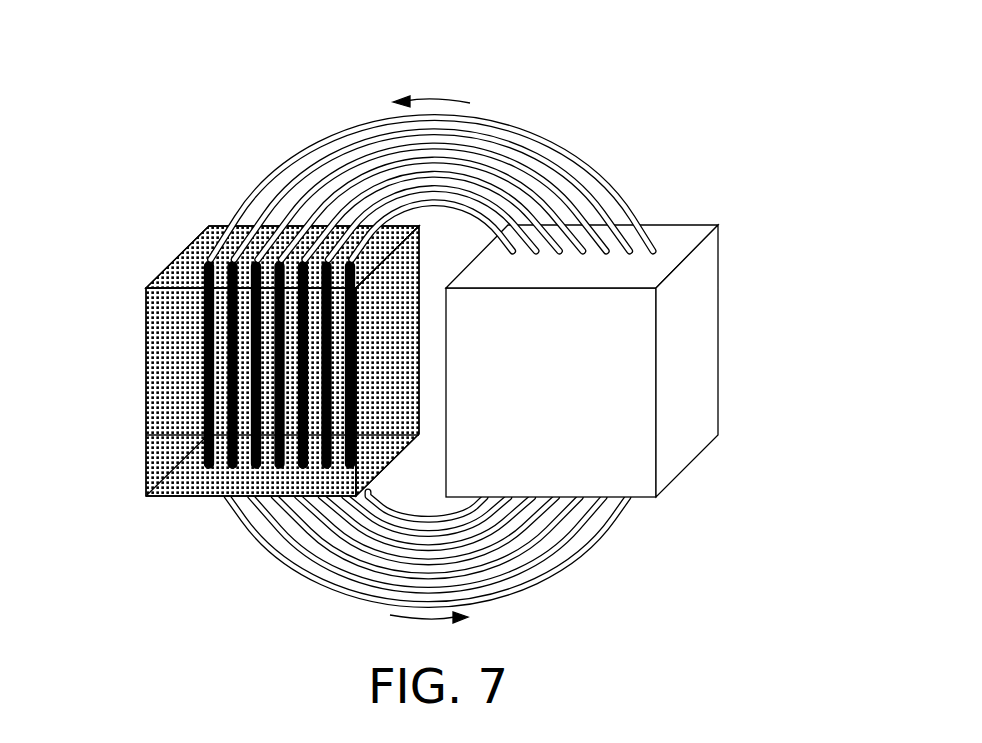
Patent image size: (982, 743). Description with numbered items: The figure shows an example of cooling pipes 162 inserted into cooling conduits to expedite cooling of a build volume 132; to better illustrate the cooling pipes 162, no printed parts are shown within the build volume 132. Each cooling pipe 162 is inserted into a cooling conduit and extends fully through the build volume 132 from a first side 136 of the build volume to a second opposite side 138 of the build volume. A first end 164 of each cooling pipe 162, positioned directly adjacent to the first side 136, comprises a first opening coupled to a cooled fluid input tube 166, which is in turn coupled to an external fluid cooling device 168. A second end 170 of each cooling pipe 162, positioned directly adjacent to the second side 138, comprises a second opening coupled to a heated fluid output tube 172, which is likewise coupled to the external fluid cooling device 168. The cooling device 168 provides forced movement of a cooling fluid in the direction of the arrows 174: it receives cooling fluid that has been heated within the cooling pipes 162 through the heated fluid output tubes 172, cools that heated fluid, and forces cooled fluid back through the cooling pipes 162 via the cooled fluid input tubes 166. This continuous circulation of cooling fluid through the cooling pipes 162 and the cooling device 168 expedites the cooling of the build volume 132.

The build volume 132 is at (254, 390).
The first side of the build volume 136 is at (167, 279).
The second opposite side of the build volume 138 is at (165, 497).
The cooling pipe 162 is at (205, 405).
The first end of the cooling pipe 164 is at (207, 260).
The cooled fluid input tube 166 is at (393, 188).
The external fluid cooling device 168 is at (706, 345).
The second end of the cooling pipe 170 is at (207, 467).
The heated fluid output tube 172 is at (281, 558).
The arrows 174 is at (444, 98).